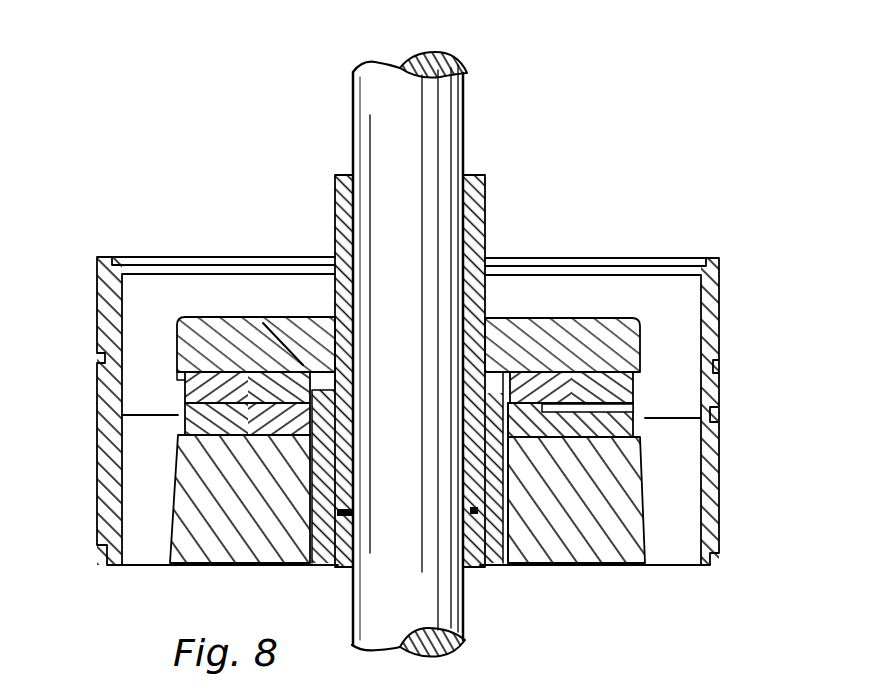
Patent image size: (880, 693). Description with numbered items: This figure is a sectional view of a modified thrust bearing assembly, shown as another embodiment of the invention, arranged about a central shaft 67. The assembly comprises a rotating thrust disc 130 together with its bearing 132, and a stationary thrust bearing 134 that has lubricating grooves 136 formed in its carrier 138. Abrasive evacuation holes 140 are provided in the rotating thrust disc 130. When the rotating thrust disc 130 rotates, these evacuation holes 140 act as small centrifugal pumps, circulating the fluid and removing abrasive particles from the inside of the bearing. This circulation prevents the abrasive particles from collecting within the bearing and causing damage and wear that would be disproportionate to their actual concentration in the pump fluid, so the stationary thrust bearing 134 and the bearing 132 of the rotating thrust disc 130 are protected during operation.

The shaft 67 is at (450, 122).
The rotating thrust disc 130 is at (578, 333).
The bearing 132 is at (637, 387).
The stationary thrust bearing 134 is at (603, 441).
The lubricating grooves 136 is at (637, 412).
The carrier 138 is at (719, 538).
The abrasive evacuation holes 140 is at (275, 323).